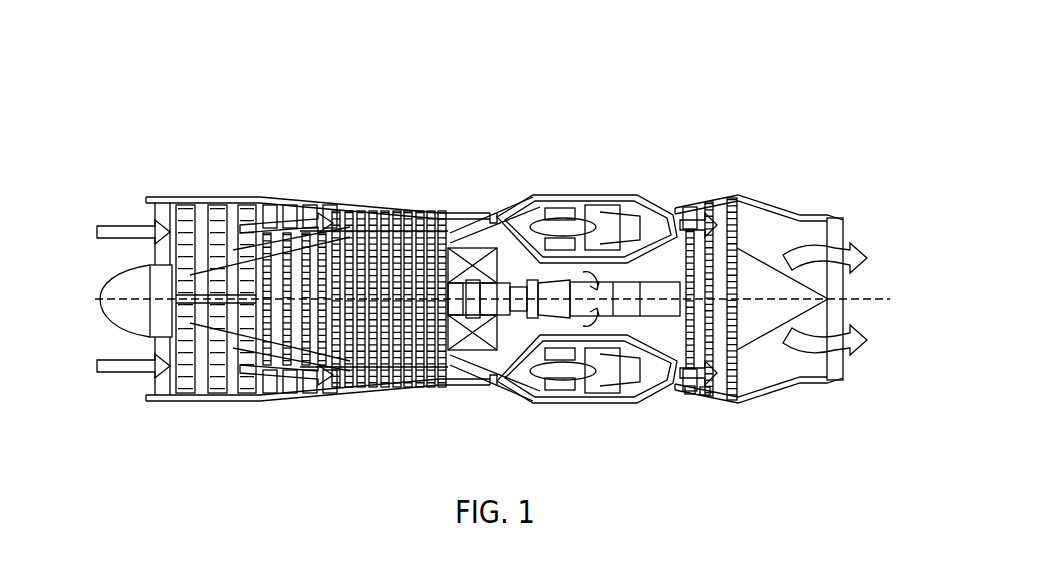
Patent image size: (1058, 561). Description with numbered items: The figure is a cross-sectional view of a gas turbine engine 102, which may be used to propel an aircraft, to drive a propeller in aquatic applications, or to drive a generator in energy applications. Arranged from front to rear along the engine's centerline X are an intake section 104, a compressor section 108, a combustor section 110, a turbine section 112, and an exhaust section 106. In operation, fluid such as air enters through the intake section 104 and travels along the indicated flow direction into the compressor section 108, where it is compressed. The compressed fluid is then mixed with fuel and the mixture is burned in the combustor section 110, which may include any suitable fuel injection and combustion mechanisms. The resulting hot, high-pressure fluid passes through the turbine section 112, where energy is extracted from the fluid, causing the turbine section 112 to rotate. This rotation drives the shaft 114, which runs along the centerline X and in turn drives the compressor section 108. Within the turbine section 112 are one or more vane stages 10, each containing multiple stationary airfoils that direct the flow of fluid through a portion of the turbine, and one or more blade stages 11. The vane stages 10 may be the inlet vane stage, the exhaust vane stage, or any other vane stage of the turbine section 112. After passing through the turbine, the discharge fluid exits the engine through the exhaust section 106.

The gas turbine engine 102 is at (323, 98).
The intake section 104 is at (128, 212).
The exhaust section 106 is at (868, 245).
The compressor section 108 is at (237, 196).
The combustor section 110 is at (594, 185).
The turbine section 112 is at (710, 190).
The shaft 114 is at (611, 297).
The vane stage 10 is at (693, 393).
The blade stage 11 is at (705, 393).